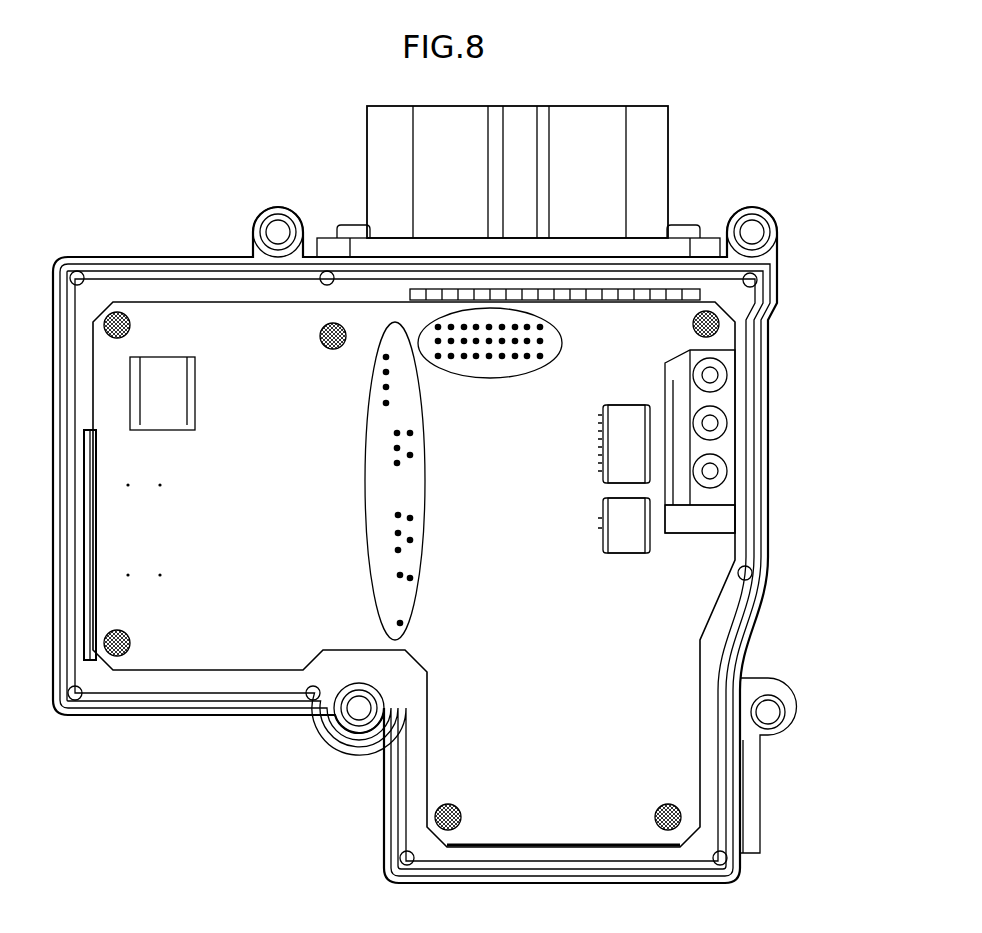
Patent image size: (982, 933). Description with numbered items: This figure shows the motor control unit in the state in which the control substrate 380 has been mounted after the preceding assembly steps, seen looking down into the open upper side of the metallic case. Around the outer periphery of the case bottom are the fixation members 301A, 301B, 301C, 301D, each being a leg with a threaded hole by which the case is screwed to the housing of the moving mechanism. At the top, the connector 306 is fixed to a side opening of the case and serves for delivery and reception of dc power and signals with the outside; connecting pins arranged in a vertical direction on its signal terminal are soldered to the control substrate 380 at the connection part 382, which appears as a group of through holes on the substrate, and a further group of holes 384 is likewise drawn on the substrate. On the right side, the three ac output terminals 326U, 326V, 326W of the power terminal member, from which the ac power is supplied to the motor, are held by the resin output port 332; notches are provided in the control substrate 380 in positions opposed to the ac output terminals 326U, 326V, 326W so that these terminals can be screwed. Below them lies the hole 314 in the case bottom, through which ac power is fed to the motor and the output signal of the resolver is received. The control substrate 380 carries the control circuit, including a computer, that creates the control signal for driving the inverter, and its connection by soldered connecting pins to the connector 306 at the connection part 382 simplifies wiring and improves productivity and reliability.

The connector 306 is at (367, 123).
The connection part 382 is at (480, 312).
The through holes group 384 is at (370, 553).
The fixation member 301A is at (752, 232).
The fixation member 301B is at (771, 716).
The fixation member 301C is at (275, 230).
The fixation member 301D is at (358, 712).
The ac output terminal 326U is at (727, 374).
The ac output terminal 326V is at (727, 421).
The ac output terminal 326W is at (727, 469).
The resin output port 332 is at (753, 452).
The hole 314 is at (716, 520).
The control substrate 380 is at (683, 618).